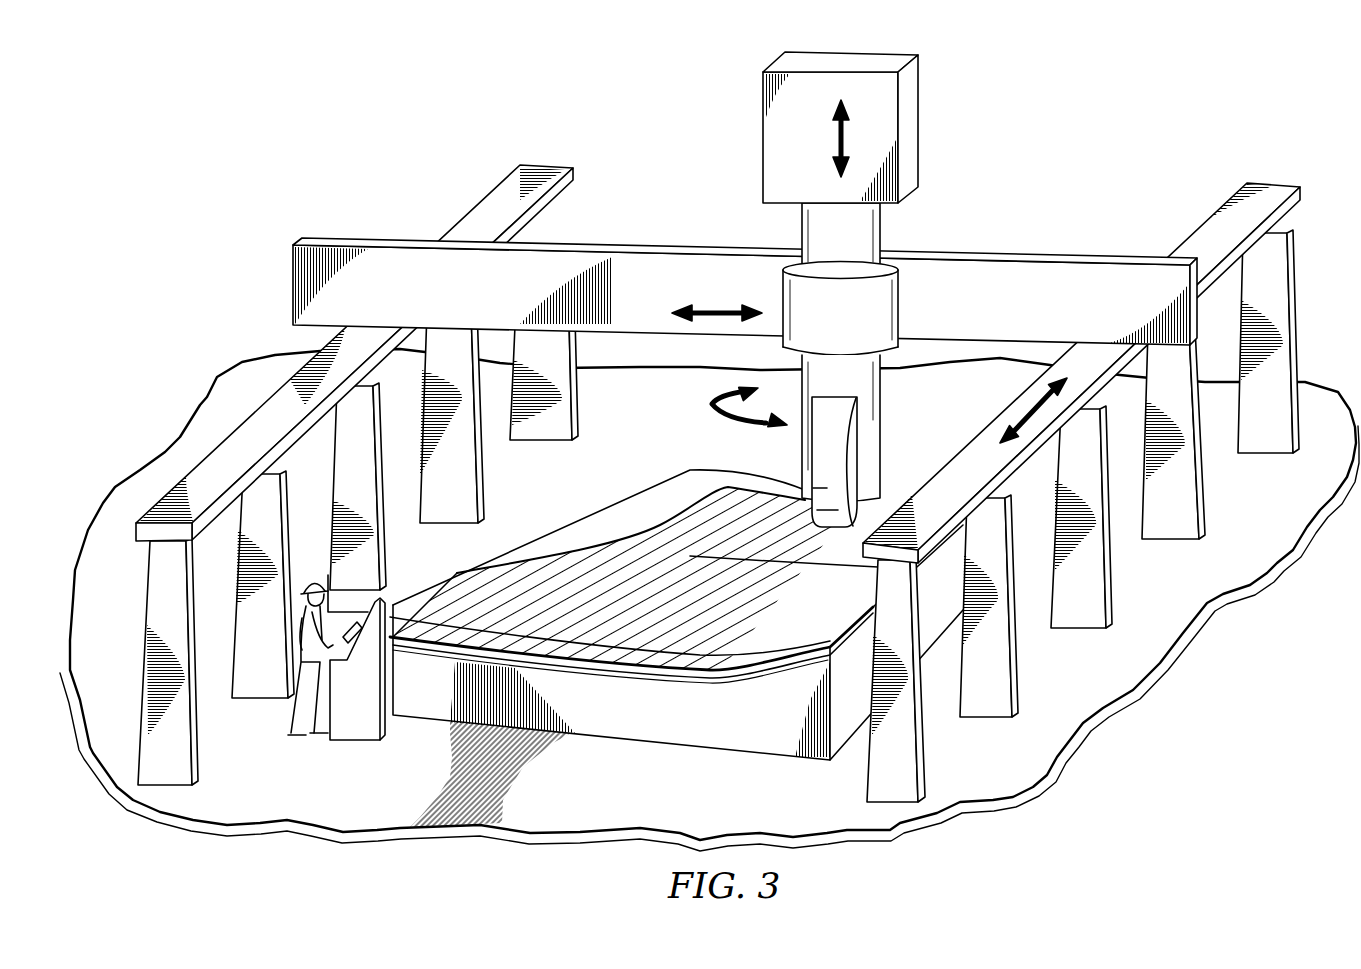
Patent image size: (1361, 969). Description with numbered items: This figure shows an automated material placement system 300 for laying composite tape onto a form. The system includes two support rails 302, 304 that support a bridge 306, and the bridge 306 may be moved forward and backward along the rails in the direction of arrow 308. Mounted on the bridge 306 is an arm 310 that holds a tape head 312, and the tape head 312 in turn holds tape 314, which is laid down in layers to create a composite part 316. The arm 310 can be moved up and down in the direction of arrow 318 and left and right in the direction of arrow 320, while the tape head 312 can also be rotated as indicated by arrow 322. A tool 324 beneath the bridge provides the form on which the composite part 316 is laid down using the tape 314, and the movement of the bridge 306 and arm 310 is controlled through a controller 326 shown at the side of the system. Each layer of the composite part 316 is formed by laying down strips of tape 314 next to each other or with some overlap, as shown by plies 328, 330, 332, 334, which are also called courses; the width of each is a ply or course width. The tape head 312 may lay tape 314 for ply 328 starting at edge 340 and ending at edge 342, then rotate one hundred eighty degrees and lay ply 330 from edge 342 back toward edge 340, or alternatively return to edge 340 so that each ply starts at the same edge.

The automated material placement system 300 is at (648, 130).
The support rail 302 is at (497, 205).
The support rail 304 is at (1217, 227).
The bridge 306 is at (1043, 278).
The arrow 308 is at (1002, 409).
The arm 310 is at (900, 313).
The tape head 312 is at (882, 415).
The tape 314 is at (838, 449).
The composite part 316 is at (587, 567).
The arrow 318 is at (840, 135).
The arrow 320 is at (715, 308).
The arrow 322 is at (712, 404).
The tool 324 is at (431, 706).
The controller 326 is at (355, 722).
The ply 328 is at (694, 672).
The ply 330 is at (676, 672).
The ply 332 is at (650, 670).
The ply 334 is at (625, 668).
The edge 340 is at (430, 653).
The edge 342 is at (651, 462).